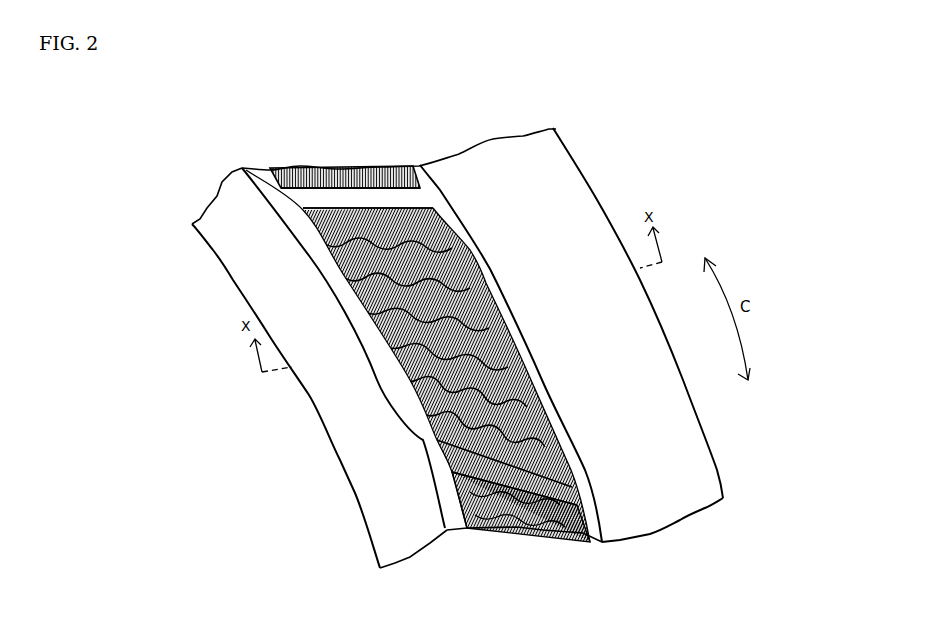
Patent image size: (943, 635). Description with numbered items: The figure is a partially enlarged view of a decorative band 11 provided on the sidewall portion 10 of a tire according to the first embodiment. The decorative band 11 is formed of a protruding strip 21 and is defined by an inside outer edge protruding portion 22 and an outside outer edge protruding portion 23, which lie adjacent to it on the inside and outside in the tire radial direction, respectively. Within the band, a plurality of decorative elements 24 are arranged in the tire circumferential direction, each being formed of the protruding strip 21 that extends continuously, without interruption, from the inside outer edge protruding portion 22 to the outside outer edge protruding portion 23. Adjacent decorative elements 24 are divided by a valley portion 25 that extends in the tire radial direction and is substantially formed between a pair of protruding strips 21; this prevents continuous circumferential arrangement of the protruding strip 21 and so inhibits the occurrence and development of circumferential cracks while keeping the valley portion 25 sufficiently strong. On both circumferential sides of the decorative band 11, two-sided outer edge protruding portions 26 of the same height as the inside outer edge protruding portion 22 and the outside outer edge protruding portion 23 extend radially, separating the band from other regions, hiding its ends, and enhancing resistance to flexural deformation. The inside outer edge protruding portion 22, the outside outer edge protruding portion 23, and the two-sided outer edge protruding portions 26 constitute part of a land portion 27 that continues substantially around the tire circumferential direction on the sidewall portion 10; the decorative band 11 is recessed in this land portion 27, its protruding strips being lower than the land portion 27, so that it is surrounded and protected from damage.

The sidewall portion 10 is at (580, 502).
The decorative band 11 is at (487, 288).
The protruding strip 21 is at (436, 206).
The inside outer edge protruding portion 22 is at (412, 395).
The outside outer edge protruding portion 23 is at (547, 387).
The decorative element 24 is at (473, 283).
The valley portion 25 is at (350, 280).
The two-sided outer edge protruding portion 26 is at (362, 200).
The land portion 27 is at (542, 364).